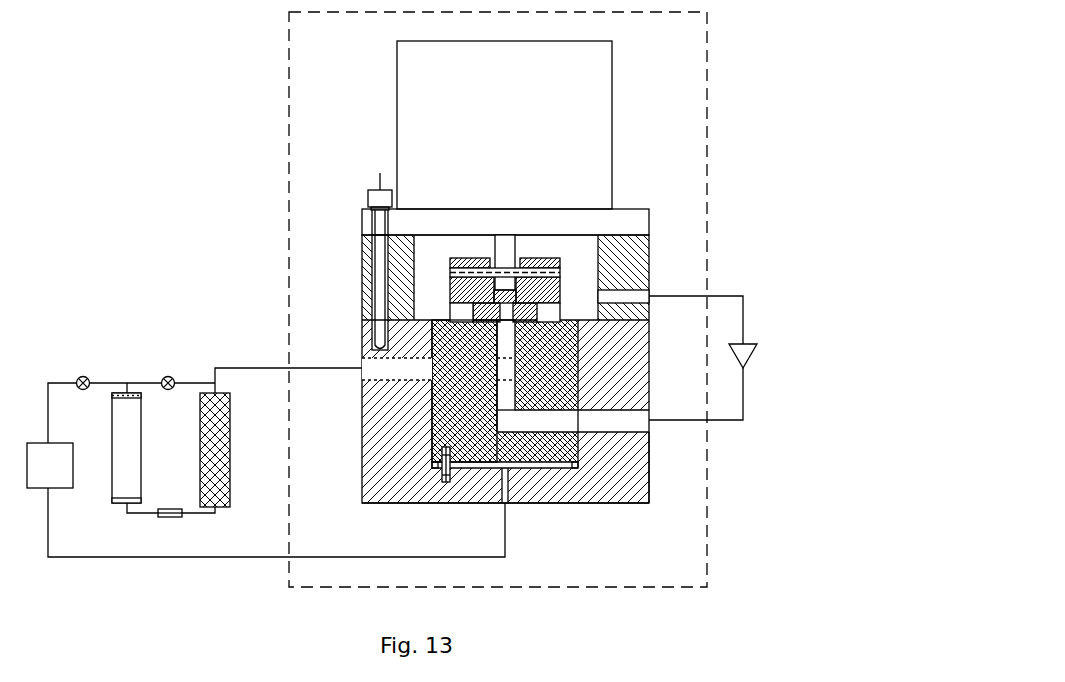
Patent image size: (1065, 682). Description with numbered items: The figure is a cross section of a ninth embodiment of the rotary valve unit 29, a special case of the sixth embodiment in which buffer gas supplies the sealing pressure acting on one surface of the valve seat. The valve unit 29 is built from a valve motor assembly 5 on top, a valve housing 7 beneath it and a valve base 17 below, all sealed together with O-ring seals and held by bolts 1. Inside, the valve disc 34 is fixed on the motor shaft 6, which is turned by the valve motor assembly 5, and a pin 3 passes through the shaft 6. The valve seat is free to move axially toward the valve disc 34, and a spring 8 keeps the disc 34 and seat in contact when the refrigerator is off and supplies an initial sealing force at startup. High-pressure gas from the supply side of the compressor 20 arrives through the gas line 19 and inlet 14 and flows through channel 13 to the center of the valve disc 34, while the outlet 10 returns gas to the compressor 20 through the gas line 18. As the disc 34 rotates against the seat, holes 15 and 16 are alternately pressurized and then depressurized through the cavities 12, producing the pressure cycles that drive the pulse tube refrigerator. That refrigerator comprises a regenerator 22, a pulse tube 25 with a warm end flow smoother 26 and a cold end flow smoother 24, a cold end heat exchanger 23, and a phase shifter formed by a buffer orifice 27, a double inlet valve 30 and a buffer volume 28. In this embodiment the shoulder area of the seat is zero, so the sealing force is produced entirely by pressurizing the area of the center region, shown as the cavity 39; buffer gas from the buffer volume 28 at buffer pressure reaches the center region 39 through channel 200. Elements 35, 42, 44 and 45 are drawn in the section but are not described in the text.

The bolts 1 is at (376, 195).
The pin 3 is at (449, 271).
The valve motor assembly 5 is at (597, 59).
The motor shaft 6 is at (508, 253).
The valve housing 7 is at (650, 272).
The spring 8 is at (437, 466).
The outlet 10 is at (638, 296).
The cavities 12 is at (456, 312).
The channel 13 is at (503, 330).
The inlet 14 is at (610, 425).
The hole 15 is at (458, 344).
The hole 16 is at (390, 374).
The valve base 17 is at (622, 450).
The gas line 18 is at (696, 310).
The gas line 19 is at (620, 400).
The compressor 20 is at (752, 359).
The regenerator 22 is at (228, 450).
The cold end heat exchanger 23 is at (170, 524).
The cold end flow smoother 24 is at (115, 503).
The pulse tube 25 is at (151, 448).
The warm end flow smoother 26 is at (114, 396).
The buffer orifice 27 is at (73, 392).
The buffer volume 28 is at (121, 435).
The valve unit 29 is at (718, 122).
The double inlet valve 30 is at (170, 396).
The valve disc 34 is at (458, 288).
The sensor 35 is at (442, 484).
The center region 39 is at (527, 466).
The partition 42 is at (430, 350).
The partition 44 is at (430, 383).
The block 45 is at (465, 425).
The channel 200 is at (503, 503).